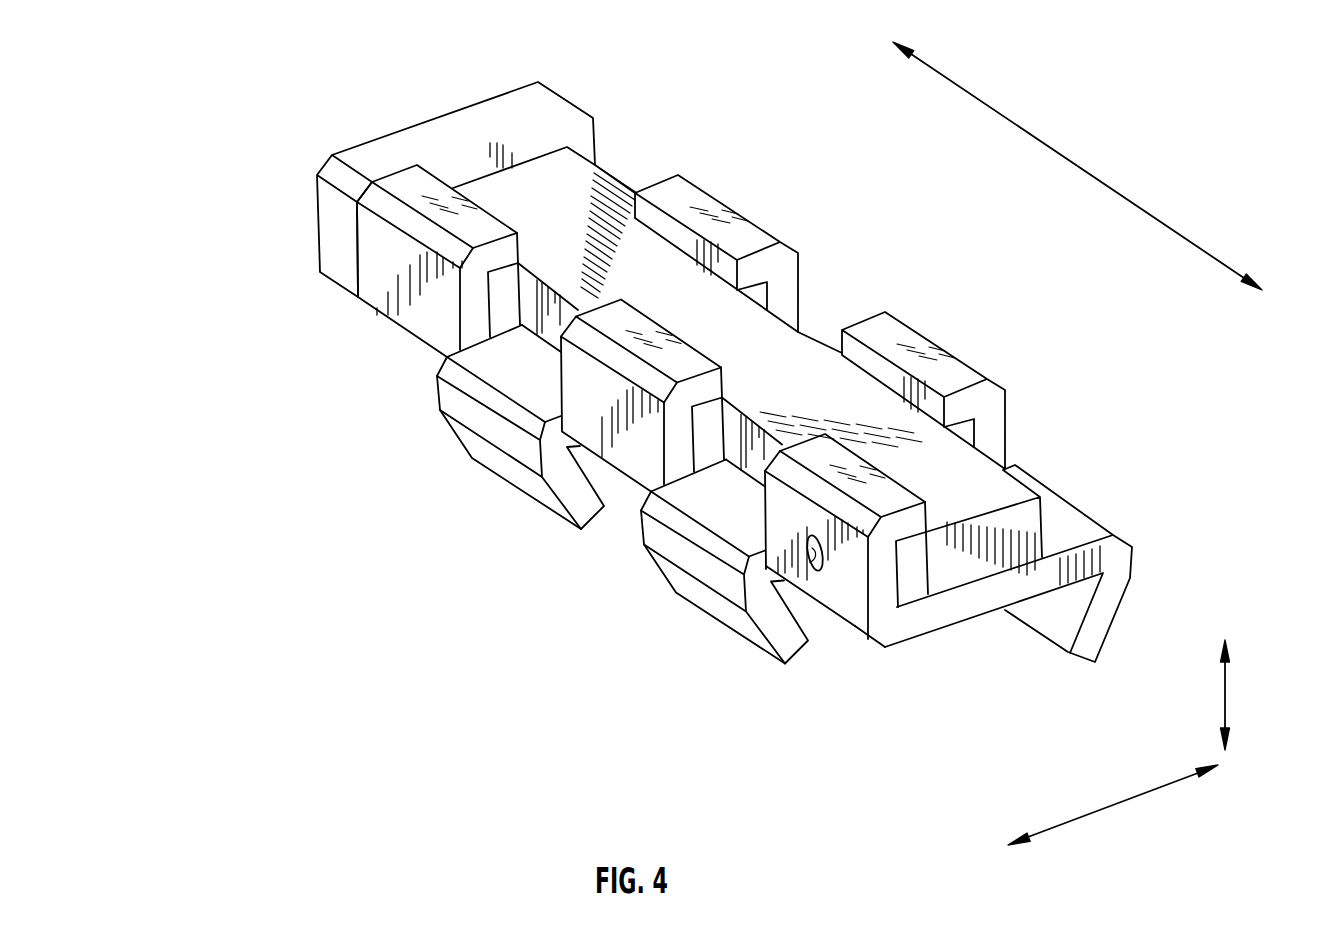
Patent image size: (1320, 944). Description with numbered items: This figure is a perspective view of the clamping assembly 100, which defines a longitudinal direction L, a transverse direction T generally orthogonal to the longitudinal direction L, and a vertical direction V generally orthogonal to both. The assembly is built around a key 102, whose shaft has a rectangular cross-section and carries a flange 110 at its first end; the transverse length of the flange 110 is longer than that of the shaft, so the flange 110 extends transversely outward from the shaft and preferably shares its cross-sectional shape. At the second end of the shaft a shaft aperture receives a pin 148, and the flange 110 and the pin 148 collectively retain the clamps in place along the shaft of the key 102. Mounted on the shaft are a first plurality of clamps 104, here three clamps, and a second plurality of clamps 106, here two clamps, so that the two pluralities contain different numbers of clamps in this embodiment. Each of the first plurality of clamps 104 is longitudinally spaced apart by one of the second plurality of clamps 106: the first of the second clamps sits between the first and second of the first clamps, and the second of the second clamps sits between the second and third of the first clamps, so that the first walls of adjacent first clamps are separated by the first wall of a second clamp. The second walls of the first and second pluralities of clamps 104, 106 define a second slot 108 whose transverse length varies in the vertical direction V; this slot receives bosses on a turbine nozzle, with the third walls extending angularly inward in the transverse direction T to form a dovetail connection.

The clamping assembly 100 is at (678, 452).
The key 102 is at (602, 168).
The first plurality of clamps 104 is at (636, 452).
The second plurality of clamps 106 is at (861, 313).
The second slot 108 is at (874, 684).
The flange 110 is at (425, 120).
The pin 148 is at (811, 575).
The longitudinal direction L is at (1062, 148).
The transverse direction T is at (1120, 826).
The vertical direction V is at (1240, 694).